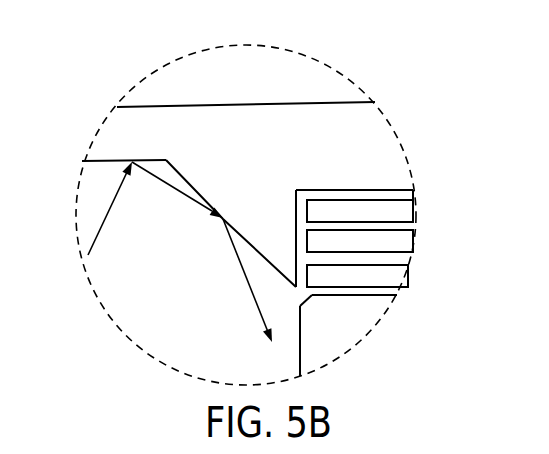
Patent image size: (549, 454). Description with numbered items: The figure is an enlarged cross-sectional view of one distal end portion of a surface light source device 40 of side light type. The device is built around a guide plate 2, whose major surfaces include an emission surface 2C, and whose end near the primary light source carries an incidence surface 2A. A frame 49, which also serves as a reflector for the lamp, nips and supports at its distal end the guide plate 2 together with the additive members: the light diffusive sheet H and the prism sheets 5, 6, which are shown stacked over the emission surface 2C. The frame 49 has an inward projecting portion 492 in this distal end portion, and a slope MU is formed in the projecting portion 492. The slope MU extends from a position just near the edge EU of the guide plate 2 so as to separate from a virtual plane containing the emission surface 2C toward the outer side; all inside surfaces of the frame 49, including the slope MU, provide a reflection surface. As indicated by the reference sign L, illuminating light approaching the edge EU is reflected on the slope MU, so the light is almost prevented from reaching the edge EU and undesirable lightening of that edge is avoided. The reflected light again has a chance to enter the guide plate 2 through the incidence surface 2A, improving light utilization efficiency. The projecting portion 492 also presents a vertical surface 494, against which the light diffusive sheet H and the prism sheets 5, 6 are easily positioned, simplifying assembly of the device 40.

The surface light source device 40 is at (120, 66).
The frame 49 is at (380, 146).
The inward projecting portion 492 is at (268, 208).
The vertical surface 494 is at (296, 232).
The prism sheet 6 is at (406, 212).
The prism sheet 5 is at (403, 245).
The light diffusive sheet H is at (397, 273).
The emission surface 2C is at (357, 297).
The guide plate 2 is at (350, 330).
The edge EU is at (308, 300).
The incidence surface 2A is at (300, 373).
The illuminating light L is at (113, 207).
The slope MU is at (183, 175).